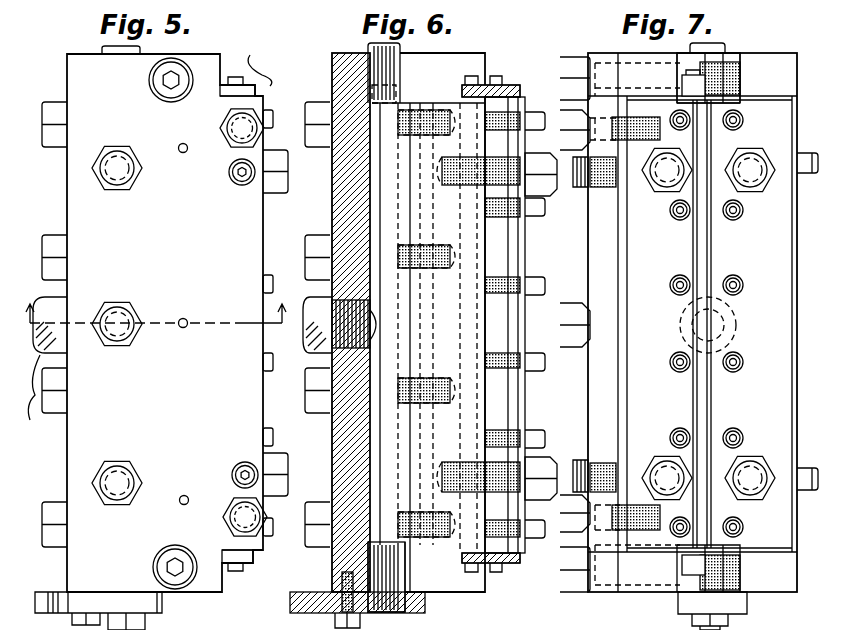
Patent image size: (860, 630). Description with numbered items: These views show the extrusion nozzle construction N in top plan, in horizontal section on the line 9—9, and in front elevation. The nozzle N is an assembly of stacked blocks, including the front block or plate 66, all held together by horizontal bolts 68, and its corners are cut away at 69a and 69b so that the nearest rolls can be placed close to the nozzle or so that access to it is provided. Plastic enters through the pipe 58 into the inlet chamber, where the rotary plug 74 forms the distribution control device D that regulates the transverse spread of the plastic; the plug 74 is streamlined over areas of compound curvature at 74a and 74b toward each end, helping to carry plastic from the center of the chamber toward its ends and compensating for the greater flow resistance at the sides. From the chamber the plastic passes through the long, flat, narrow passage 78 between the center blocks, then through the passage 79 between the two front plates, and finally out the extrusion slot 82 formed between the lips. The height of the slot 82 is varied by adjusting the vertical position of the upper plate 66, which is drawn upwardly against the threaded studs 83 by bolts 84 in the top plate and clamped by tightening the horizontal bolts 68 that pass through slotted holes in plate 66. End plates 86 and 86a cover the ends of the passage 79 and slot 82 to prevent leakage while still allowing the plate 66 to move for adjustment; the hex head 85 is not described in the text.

In FIG. 5, the section line 9— 9 is at (155, 308).
In FIG. 5, the pipe 58 is at (38, 400).
In FIG. 6, the pipe 58 is at (323, 350).
In FIG. 7, the front block or plate 66 is at (638, 288).
In FIG. 7, the horizontal bolts 68 is at (752, 196).
In FIG. 5, the cut-away corner 69a is at (225, 578).
In FIG. 5, the cut-away corner 69b is at (230, 52).
In FIG. 6, the rotary plug 74 is at (410, 605).
In FIG. 6, the streamlined area of compound curvature 74a is at (378, 168).
In FIG. 6, the streamlined area of compound curvature 74b is at (380, 482).
In FIG. 6, the flat narrow passage 78 is at (425, 112).
In FIG. 6, the passage 79 is at (500, 105).
In FIG. 7, the extrusion slot 82 is at (712, 325).
In FIG. 5, the threaded studs 83 is at (240, 182).
In FIG. 7, the threaded studs 83 is at (578, 182).
In FIG. 5, the bolts 84 is at (228, 133).
In FIG. 7, the bolts 84 is at (567, 120).
In FIG. 7, the hex head plug 85 is at (668, 196).
In FIG. 6, the end plate 86 is at (515, 562).
In FIG. 6, the end plate 86a is at (488, 88).
In FIG. 7, the end plate 86a is at (745, 75).
In FIG. 6, the distribution control device D is at (370, 290).
In FIG. 5, the nozzle construction N is at (261, 62).